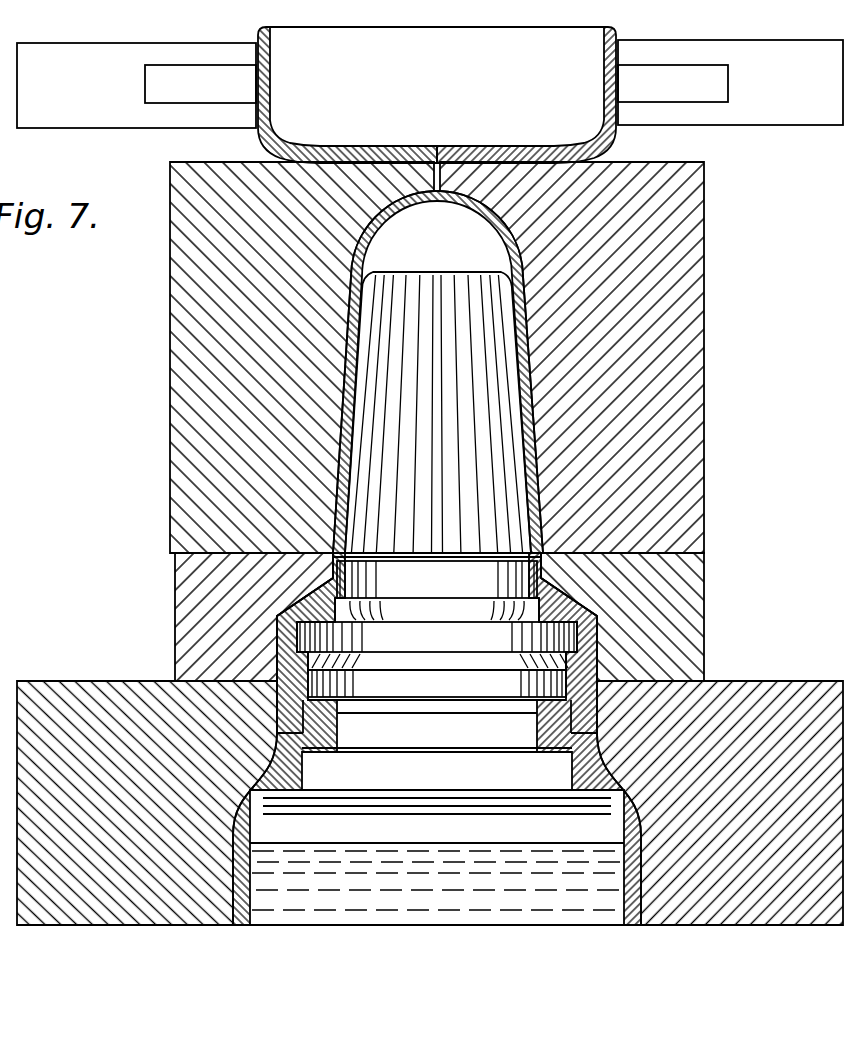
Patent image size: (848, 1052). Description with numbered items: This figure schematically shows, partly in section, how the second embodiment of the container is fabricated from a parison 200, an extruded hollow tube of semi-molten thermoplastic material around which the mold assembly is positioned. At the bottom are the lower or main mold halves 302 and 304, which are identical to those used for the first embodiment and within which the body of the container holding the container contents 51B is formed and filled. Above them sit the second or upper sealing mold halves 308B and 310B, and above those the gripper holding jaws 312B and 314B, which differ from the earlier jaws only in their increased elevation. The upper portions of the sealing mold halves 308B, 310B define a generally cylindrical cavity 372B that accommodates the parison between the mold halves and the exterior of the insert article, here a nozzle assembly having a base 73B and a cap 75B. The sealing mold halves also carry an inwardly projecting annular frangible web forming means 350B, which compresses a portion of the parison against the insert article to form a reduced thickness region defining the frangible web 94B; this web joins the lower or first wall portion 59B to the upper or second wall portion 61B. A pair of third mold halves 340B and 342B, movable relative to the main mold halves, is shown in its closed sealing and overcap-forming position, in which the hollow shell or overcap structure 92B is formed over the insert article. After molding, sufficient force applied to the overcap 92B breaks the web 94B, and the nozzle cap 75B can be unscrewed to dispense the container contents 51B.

The parison 200 is at (602, 78).
The gripper holding jaw 312B is at (119, 118).
The gripper holding jaw 314B is at (746, 117).
The third mold half 340B is at (190, 367).
The third mold half 342B is at (683, 352).
The overcap structure 92B is at (489, 206).
The nozzle cap 75B is at (452, 298).
The second wall portion 61B is at (312, 557).
The cylindrical cavity 372B is at (545, 548).
The frangible web forming means 350B is at (318, 578).
The frangible web 94B is at (605, 602).
The first wall portion 59B is at (320, 597).
The upper sealing mold half 308B is at (176, 605).
The upper sealing mold half 310B is at (706, 582).
The main mold half 302 is at (80, 690).
The main mold half 304 is at (740, 684).
The nozzle base 73B is at (350, 617).
The container contents 51B is at (480, 910).